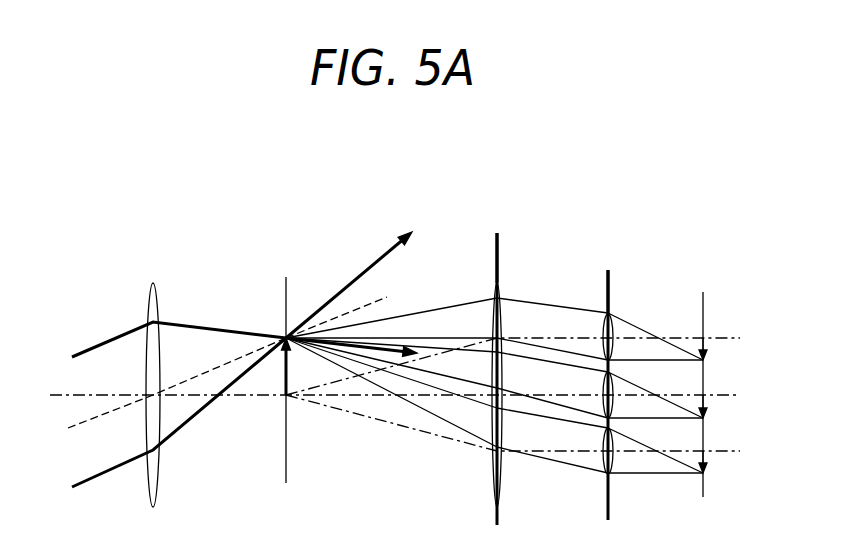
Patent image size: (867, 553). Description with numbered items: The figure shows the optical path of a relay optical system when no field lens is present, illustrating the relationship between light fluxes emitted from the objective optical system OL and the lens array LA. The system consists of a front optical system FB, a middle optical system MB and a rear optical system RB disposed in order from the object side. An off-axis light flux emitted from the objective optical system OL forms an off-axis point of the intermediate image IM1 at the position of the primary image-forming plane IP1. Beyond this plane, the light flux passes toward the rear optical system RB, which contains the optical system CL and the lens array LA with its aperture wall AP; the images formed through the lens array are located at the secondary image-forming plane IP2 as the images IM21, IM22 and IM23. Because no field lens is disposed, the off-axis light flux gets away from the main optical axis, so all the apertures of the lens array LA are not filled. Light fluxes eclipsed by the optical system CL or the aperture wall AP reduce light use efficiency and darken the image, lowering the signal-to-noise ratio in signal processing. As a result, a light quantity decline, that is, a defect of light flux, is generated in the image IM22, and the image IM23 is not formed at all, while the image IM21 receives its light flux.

The front optical system FB is at (102, 173).
The middle optical system MB is at (213, 173).
The rear optical system RB is at (357, 173).
The objective optical system OL is at (125, 232).
The primary image-forming plane IP1 is at (272, 232).
The intermediate image IM1 is at (287, 375).
The optical system CL is at (505, 230).
The aperture wall AP is at (606, 285).
The lens array LA is at (602, 230).
The secondary image-forming plane IP2 is at (715, 233).
The image IM21 is at (706, 347).
The image IM22 is at (706, 405).
The image IM23 is at (706, 460).